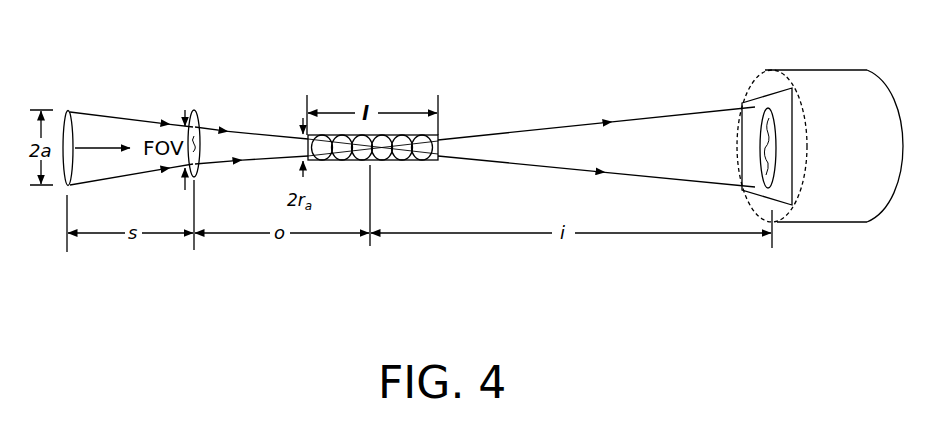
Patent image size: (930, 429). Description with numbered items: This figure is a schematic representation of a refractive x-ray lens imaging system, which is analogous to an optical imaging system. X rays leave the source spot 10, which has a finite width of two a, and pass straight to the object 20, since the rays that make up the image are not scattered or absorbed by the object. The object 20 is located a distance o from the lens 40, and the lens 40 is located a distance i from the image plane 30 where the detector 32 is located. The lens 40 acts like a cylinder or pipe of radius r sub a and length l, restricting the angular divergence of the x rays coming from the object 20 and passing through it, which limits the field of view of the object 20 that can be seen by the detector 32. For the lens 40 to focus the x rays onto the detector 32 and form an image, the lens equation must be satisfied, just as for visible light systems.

The source spot 10 is at (92, 105).
The object 20 is at (193, 98).
The image plane 30 is at (783, 100).
The detector 32 is at (800, 230).
The lens 40 is at (428, 167).